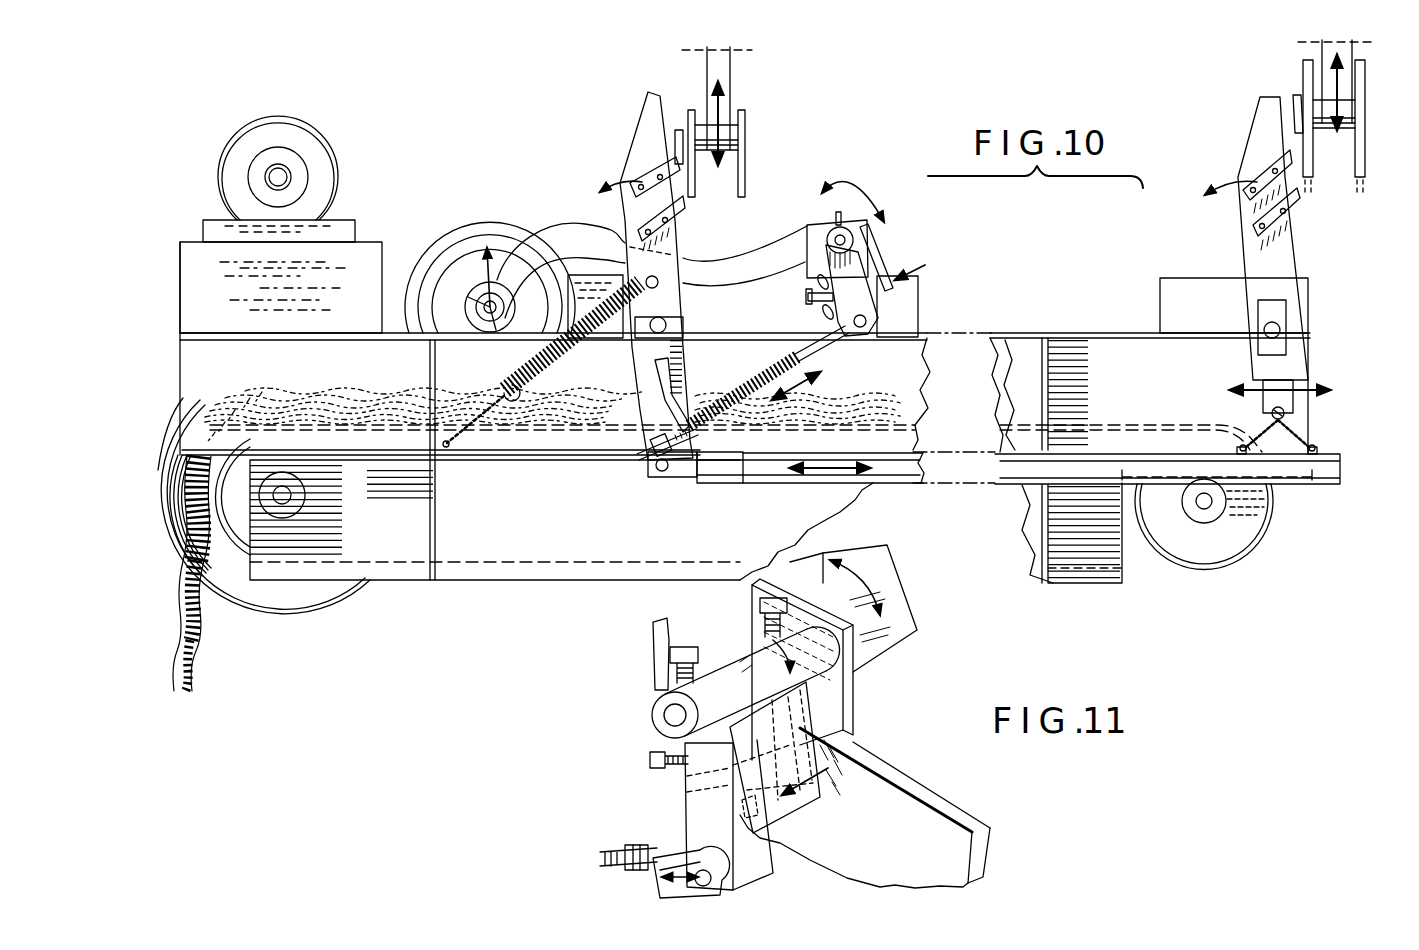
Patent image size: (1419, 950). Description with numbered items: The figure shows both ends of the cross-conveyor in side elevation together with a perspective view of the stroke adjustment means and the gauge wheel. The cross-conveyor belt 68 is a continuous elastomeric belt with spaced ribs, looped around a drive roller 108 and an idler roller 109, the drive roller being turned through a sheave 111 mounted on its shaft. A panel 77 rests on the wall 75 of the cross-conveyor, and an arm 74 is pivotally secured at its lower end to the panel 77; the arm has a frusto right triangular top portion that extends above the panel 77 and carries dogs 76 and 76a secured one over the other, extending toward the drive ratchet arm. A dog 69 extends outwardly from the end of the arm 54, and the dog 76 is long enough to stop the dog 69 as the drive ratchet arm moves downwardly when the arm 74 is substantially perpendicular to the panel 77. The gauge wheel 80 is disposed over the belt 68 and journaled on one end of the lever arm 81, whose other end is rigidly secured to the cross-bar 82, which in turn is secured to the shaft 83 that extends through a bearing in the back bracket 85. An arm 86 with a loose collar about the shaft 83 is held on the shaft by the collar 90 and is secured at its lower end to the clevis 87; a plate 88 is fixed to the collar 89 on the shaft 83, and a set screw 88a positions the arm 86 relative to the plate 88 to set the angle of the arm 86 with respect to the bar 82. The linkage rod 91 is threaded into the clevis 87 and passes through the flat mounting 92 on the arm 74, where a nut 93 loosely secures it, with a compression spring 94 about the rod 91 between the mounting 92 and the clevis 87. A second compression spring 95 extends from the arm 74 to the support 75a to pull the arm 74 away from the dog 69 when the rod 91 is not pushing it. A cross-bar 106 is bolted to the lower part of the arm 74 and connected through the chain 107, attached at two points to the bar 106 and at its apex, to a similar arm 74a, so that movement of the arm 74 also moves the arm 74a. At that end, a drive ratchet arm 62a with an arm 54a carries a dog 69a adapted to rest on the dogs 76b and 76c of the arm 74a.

In FIG. 10, the arm 54 is at (762, 125).
In FIG. 10, the arm 54a is at (1300, 70).
In FIG. 10, the drive ratchet arm 62a is at (1322, 52).
In FIG. 10, the cross-conveyor belt 68 is at (462, 590).
In FIG. 10, the dog 69 is at (680, 128).
In FIG. 10, the dog 69a is at (1292, 92).
In FIG. 10, the arm 74 is at (690, 308).
In FIG. 10, the arm 74a is at (1250, 258).
In FIG. 10, the wall 75 is at (612, 532).
In FIG. 10, the support 75a is at (440, 490).
In FIG. 10, the dog 76 is at (648, 160).
In FIG. 10, the dog 76a is at (682, 228).
In FIG. 10, the dog 76b is at (1262, 160).
In FIG. 10, the dog 76c is at (1295, 205).
In FIG. 10, the panel 77 is at (918, 298).
In FIG. 11, the panel 77 is at (890, 773).
In FIG. 10, the gauge wheel 80 is at (462, 235).
In FIG. 10, the lever arm 81 is at (548, 237).
In FIG. 10, the cross-bar 82 is at (870, 200).
In FIG. 11, the cross-bar 82 is at (890, 637).
In FIG. 10, the shaft 83 is at (835, 237).
In FIG. 11, the shaft 83 is at (668, 718).
In FIG. 10, the back bracket 85 is at (806, 262).
In FIG. 11, the back bracket 85 is at (853, 705).
In FIG. 11, the arm 86 is at (690, 795).
In FIG. 10, the clevis 87 is at (858, 334).
In FIG. 11, the clevis 87 is at (660, 845).
In FIG. 10, the plate 88 is at (878, 270).
In FIG. 11, the plate 88 is at (782, 812).
In FIG. 10, the set screw 88a is at (806, 298).
In FIG. 11, the set screw 88a is at (650, 760).
In FIG. 11, the collar 89 is at (770, 640).
In FIG. 11, the collar 90 is at (665, 690).
In FIG. 11, the linkage rod 91 is at (630, 885).
In FIG. 10, the flat mounting 92 is at (681, 478).
In FIG. 10, the nut 93 is at (645, 445).
In FIG. 10, the compression spring 94 is at (745, 392).
In FIG. 11, the compression spring 94 is at (607, 858).
In FIG. 10, the compression spring 95 is at (520, 360).
In FIG. 10, the cross-bar 106 is at (915, 450).
In FIG. 10, the chain 107 is at (1300, 432).
In FIG. 10, the drive roller 108 is at (262, 505).
In FIG. 10, the idler roller 109 is at (1225, 540).
In FIG. 10, the sheave 111 is at (183, 436).